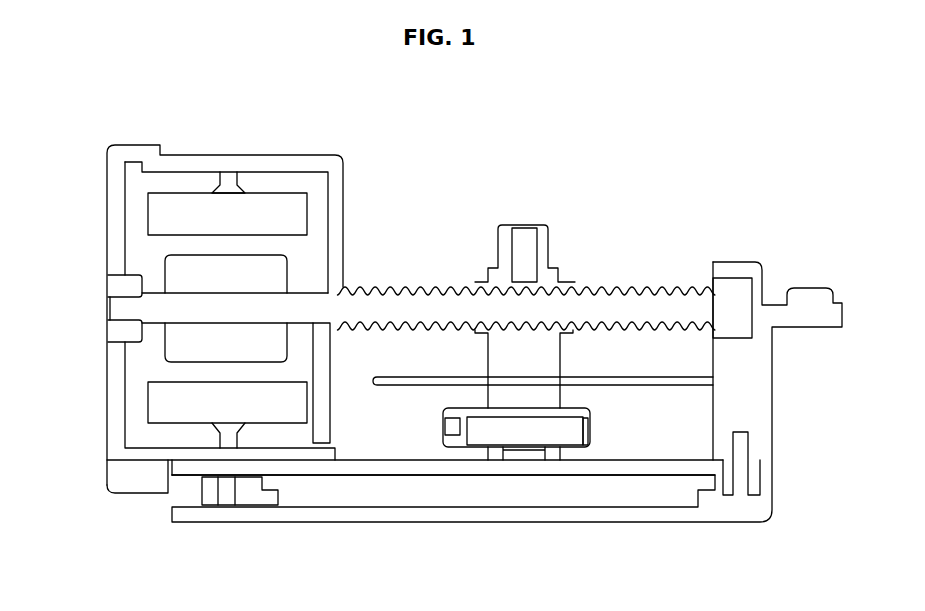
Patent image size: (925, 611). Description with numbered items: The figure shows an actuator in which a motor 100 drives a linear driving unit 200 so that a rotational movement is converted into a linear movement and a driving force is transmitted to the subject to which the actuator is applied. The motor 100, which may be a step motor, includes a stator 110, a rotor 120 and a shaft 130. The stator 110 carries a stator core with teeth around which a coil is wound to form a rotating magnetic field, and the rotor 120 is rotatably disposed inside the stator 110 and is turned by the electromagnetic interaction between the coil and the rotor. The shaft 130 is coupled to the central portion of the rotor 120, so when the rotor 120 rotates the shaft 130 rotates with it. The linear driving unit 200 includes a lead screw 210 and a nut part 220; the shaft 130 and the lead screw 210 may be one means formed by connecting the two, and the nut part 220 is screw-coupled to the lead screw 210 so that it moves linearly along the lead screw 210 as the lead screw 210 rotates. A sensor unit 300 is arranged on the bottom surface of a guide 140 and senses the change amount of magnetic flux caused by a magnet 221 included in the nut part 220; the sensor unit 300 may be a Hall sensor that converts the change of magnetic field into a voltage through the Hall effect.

The motor 100 is at (233, 142).
The stator 110 is at (167, 208).
The rotor 120 is at (190, 274).
The shaft 130 is at (172, 309).
The guide 140 is at (385, 465).
The linear driving unit 200 is at (525, 267).
The lead screw 210 is at (423, 287).
The nut part 220 is at (505, 240).
The magnet 221 is at (560, 432).
The sensor unit 300 is at (512, 461).